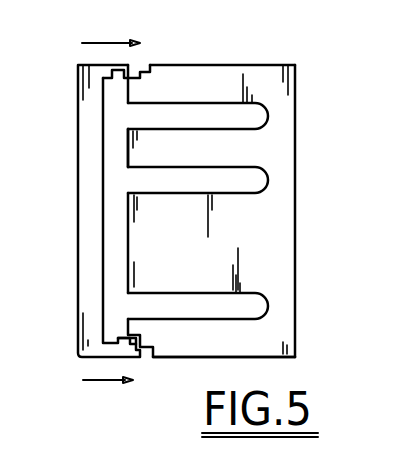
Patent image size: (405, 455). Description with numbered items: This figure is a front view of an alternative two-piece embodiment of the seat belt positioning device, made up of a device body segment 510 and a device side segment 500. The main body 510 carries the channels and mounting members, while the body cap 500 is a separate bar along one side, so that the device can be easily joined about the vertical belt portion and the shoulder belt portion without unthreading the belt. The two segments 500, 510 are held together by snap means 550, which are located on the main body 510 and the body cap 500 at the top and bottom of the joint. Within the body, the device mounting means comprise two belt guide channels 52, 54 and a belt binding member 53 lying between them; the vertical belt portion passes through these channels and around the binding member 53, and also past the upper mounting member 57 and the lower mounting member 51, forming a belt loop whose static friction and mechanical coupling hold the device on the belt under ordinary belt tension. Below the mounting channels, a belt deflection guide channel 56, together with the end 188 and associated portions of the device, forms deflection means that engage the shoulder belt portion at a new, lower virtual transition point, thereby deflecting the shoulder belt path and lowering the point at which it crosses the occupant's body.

The device side segment 500 is at (78, 74).
The snap means 550 is at (121, 75).
The upper mounting member 57 is at (222, 72).
The device body segment 510 is at (263, 72).
The lower mounting member 51 is at (262, 236).
The belt guide channel 52 is at (259, 109).
The belt binding member 53 is at (247, 150).
The belt guide channel 54 is at (257, 176).
The belt deflection guide channel 56 is at (257, 294).
The end 188 is at (268, 336).